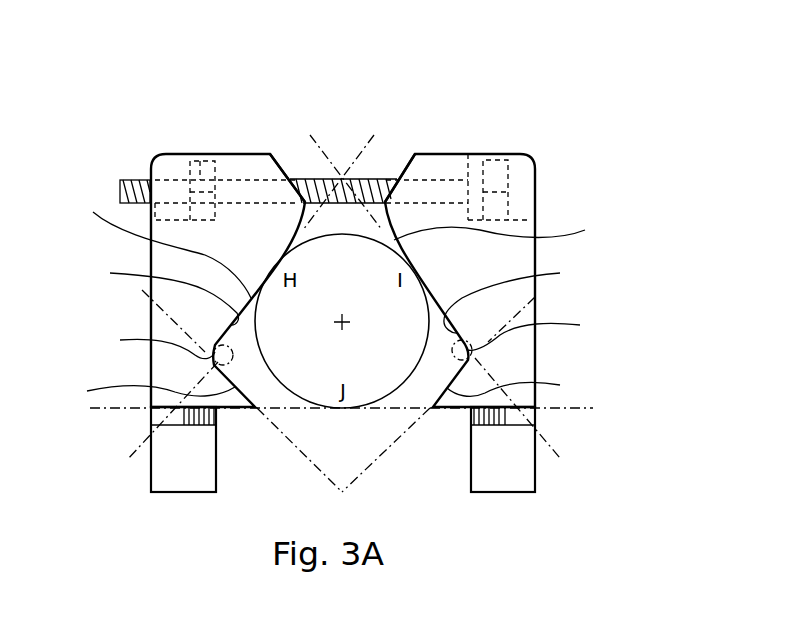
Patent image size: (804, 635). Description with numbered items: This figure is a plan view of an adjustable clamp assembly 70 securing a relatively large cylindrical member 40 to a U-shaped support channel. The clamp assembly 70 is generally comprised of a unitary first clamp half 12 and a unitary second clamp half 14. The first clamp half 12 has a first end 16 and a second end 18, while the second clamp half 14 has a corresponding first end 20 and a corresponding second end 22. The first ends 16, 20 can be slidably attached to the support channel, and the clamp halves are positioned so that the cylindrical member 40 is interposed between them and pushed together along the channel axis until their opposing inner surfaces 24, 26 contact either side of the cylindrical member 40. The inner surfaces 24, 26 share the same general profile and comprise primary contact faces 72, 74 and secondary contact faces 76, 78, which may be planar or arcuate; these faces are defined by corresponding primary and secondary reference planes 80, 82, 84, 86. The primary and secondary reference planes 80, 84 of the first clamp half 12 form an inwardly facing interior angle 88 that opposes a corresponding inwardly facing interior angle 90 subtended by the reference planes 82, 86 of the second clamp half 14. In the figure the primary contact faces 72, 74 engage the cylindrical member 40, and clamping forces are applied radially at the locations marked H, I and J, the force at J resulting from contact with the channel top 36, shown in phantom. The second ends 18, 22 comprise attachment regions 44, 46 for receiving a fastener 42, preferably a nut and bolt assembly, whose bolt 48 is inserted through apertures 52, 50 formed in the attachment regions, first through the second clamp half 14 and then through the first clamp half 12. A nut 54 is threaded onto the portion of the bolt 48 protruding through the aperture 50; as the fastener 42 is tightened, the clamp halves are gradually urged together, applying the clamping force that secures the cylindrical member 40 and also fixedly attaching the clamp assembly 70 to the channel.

The clamp assembly 70 is at (508, 82).
The first clamp half 12 is at (237, 249).
The second clamp half 14 is at (452, 284).
The first end 16 is at (190, 492).
The first end 20 is at (503, 492).
The second end 18 is at (210, 153).
The second end 22 is at (485, 153).
The inner surface 24 is at (160, 294).
The inner surface 26 is at (515, 296).
The channel top 36 is at (593, 412).
The cylindrical member 40 is at (307, 401).
The fastener 42 is at (500, 158).
The attachment region 44 is at (283, 169).
The attachment region 46 is at (396, 170).
The bolt 48 is at (493, 200).
The aperture 50 is at (232, 153).
The aperture 52 is at (432, 175).
The nut 54 is at (192, 152).
The primary contact face 72 is at (156, 248).
The primary contact face 74 is at (502, 228).
The secondary contact face 76 is at (146, 392).
The secondary contact face 78 is at (517, 385).
The primary reference plane 80 is at (320, 148).
The primary reference plane 82 is at (362, 148).
The secondary reference plane 84 is at (280, 428).
The secondary reference plane 86 is at (407, 420).
The interior angle 88 is at (161, 346).
The interior angle 90 is at (531, 336).